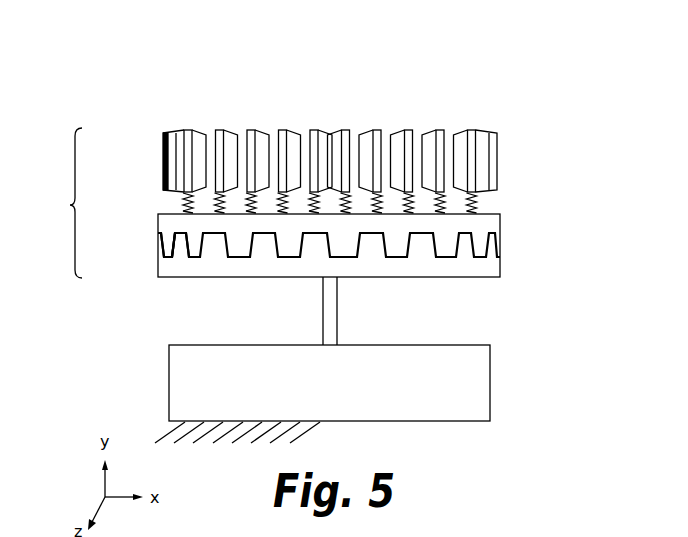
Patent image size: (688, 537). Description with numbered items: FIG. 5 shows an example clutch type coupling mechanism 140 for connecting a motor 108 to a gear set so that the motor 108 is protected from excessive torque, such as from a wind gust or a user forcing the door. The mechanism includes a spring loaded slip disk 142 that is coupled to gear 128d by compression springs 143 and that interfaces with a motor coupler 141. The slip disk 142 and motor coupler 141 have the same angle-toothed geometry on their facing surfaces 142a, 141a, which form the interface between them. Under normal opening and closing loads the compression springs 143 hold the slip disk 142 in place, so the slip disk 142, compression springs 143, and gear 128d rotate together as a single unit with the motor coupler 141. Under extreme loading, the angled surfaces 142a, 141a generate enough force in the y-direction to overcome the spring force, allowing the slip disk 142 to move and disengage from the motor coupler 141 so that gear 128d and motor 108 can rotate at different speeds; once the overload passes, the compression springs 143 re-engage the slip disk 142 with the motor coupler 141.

The motor 108 is at (407, 395).
The gear 128d is at (315, 124).
The clutch type coupling mechanism 140 is at (57, 203).
The motor coupler 141 is at (494, 286).
The angle-toothed facing surface of motor coupler 141a is at (176, 263).
The slip disk 142 is at (506, 226).
The angle-toothed facing surface of slip disk 142a is at (180, 251).
The compression springs 143 is at (160, 191).